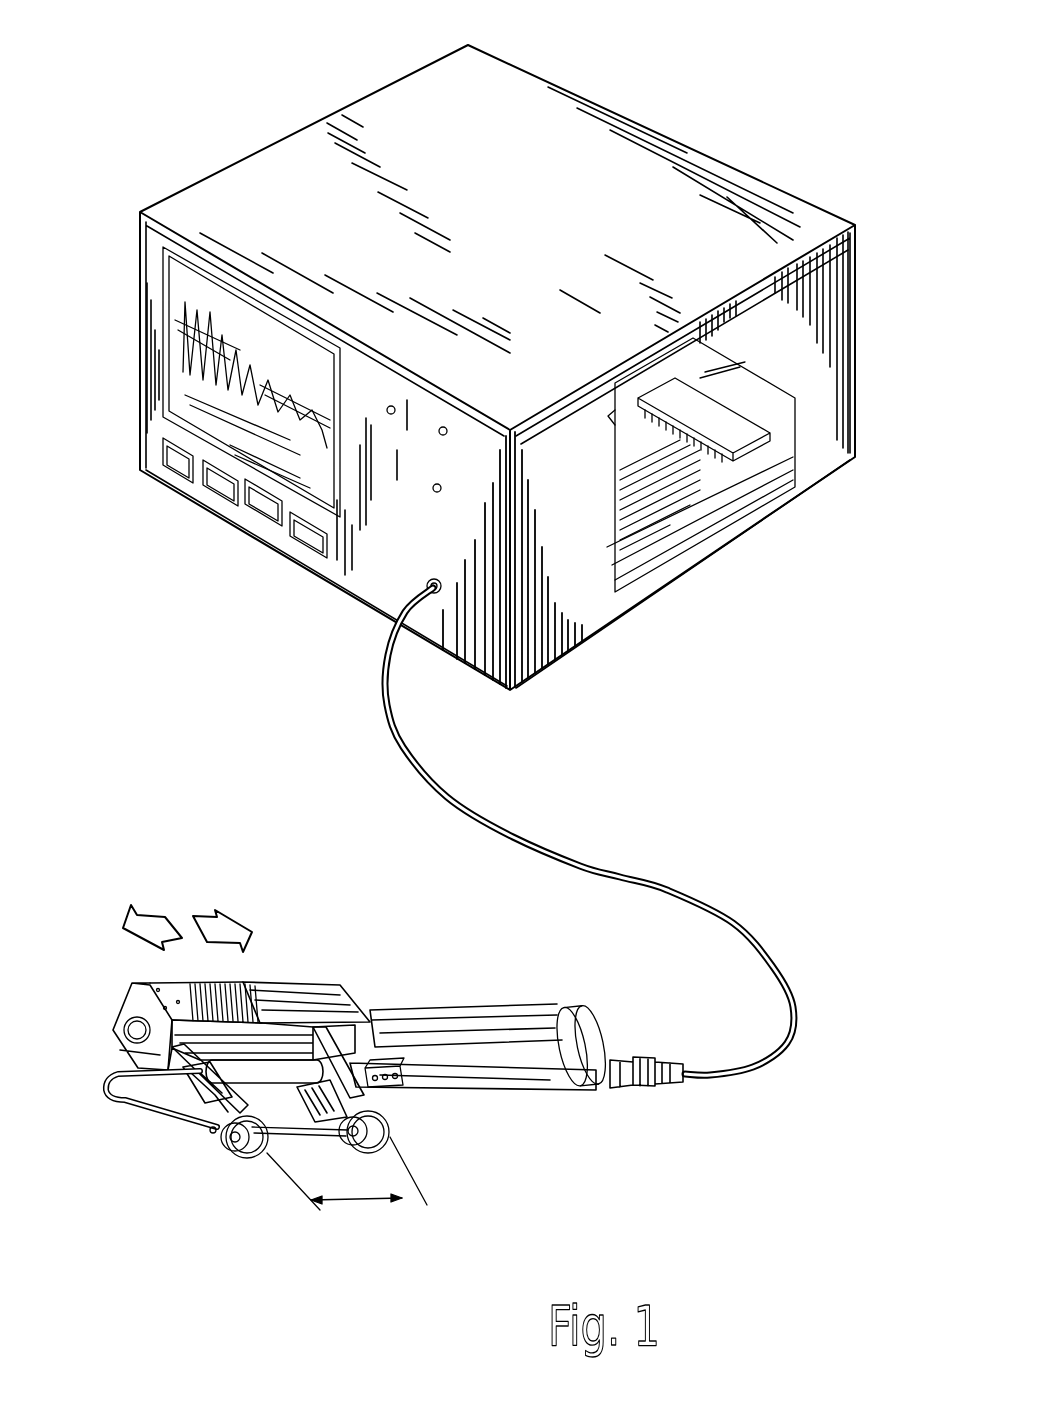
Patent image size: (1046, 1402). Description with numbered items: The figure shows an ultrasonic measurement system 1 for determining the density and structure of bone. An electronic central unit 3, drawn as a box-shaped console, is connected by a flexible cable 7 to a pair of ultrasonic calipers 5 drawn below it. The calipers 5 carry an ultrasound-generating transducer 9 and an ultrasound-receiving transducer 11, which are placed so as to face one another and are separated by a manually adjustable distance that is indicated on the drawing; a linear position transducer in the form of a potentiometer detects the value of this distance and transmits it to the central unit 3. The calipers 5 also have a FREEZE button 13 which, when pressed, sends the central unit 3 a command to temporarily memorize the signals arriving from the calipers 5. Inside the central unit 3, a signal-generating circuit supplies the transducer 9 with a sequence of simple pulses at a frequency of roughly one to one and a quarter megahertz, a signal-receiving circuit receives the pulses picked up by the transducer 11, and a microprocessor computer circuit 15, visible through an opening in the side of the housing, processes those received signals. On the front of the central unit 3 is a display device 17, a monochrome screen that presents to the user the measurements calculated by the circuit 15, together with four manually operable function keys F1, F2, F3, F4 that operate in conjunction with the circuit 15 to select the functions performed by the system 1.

The ultrasonic measurement system 1 is at (208, 105).
The electronic central unit 3 is at (312, 122).
The ultrasonic calipers 5 is at (282, 920).
The flexible cable 7 is at (667, 893).
The ultrasound-generating transducer 9 is at (230, 1152).
The ultrasound-receiving transducer 11 is at (392, 1137).
The button (FREEZE) 13 is at (400, 1090).
The microprocessor computer circuit 15 is at (700, 524).
The display device 17 is at (183, 358).
The function key F1 is at (176, 483).
The function key F2 is at (214, 506).
The function key F3 is at (258, 530).
The function key F4 is at (301, 556).